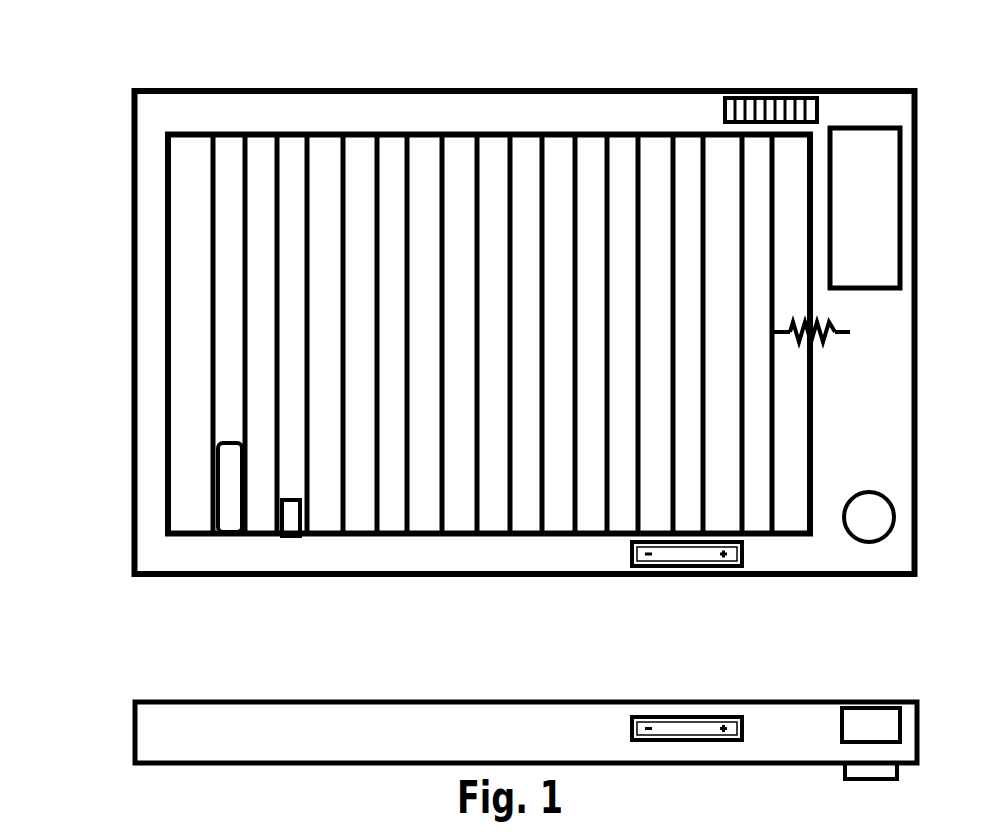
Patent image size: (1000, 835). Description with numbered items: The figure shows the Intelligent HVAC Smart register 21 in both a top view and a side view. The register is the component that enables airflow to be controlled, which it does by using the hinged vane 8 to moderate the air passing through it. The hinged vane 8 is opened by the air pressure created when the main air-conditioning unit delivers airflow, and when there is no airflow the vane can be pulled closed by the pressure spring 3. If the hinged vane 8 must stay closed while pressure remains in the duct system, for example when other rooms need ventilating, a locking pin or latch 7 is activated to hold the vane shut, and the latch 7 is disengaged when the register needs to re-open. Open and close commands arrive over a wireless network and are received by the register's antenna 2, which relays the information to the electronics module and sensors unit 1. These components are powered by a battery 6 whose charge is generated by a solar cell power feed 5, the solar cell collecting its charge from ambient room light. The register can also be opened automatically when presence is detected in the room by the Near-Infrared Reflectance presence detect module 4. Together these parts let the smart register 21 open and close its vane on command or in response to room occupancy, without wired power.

The electronics module / sensors unit 1 is at (887, 267).
The antenna 2 is at (740, 96).
The pressure spring 3 is at (787, 322).
The Near-Infrared Reflectance (NIR) presence detect module 4 is at (858, 527).
The solar cell power feed 5 is at (230, 468).
The battery 6 is at (683, 552).
The locking pin or latch 7 is at (290, 520).
The hinged vane 8 is at (228, 172).
The Intelligent HVAC Smart register 21 is at (145, 279).